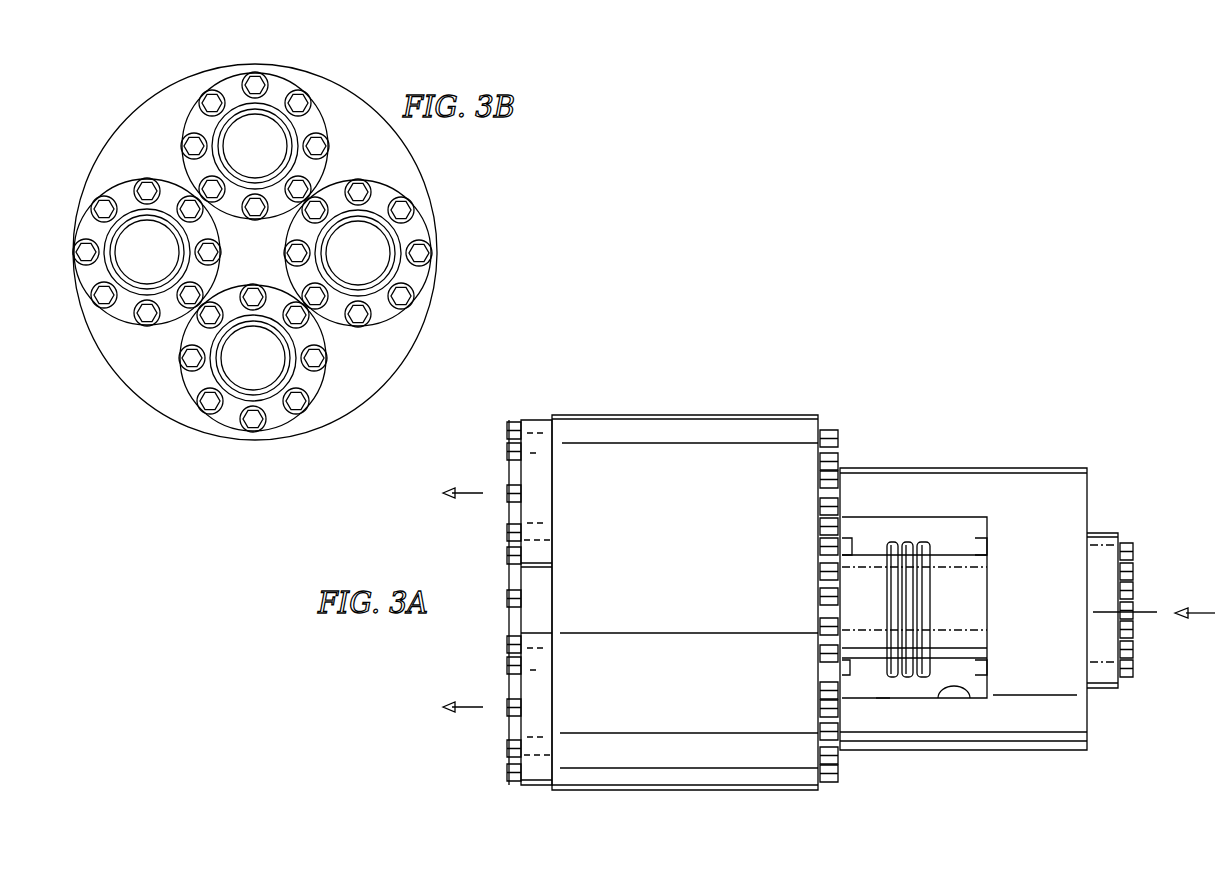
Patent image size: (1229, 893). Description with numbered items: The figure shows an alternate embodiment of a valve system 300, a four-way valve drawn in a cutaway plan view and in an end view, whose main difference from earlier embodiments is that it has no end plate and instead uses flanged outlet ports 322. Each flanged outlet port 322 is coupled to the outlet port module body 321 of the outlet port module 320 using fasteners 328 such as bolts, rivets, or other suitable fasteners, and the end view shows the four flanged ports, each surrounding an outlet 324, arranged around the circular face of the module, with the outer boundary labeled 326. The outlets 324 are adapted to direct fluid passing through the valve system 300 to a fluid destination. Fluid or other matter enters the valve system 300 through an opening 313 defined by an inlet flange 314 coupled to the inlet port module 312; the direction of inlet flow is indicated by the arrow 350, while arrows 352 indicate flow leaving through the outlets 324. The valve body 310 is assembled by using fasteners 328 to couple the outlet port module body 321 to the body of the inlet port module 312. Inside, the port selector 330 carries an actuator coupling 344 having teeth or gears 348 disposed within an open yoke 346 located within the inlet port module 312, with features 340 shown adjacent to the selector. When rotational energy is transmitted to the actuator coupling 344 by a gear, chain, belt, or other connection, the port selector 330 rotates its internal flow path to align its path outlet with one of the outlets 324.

In FIG. 3A, the valve system 300 is at (935, 322).
In FIG. 3A, the valve body 310 is at (807, 375).
In FIG. 3A, the inlet port module 312 is at (1047, 466).
In FIG. 3A, the opening 313 is at (1150, 628).
In FIG. 3A, the inlet flange 314 is at (1102, 531).
In FIG. 3A, the outlet port module 320 is at (585, 395).
In FIG. 3A, the outlet port module body 321 is at (645, 790).
In FIG. 3B, the flanged outlet ports 322 is at (286, 234).
In FIG. 3A, the flanged outlet ports 322 is at (538, 418).
In FIG. 3B, the outlets 324 is at (238, 160).
In FIG. 3A, the outlets 324 is at (507, 514).
In FIG. 3B, the outer housing wall 326 is at (181, 420).
In FIG. 3B, the fasteners 328 is at (136, 178).
In FIG. 3A, the fasteners 328 is at (507, 420).
In FIG. 3A, the port selector 330 is at (985, 600).
In FIG. 3A, the stop block 340 is at (840, 670).
In FIG. 3A, the actuator coupling 344 is at (885, 667).
In FIG. 3A, the open yoke 346 is at (968, 698).
In FIG. 3A, the teeth or gears 348 is at (920, 545).
In FIG. 3A, the inlet flow arrow 350 is at (1198, 609).
In FIG. 3A, the outlet flow arrow 352 is at (457, 490).